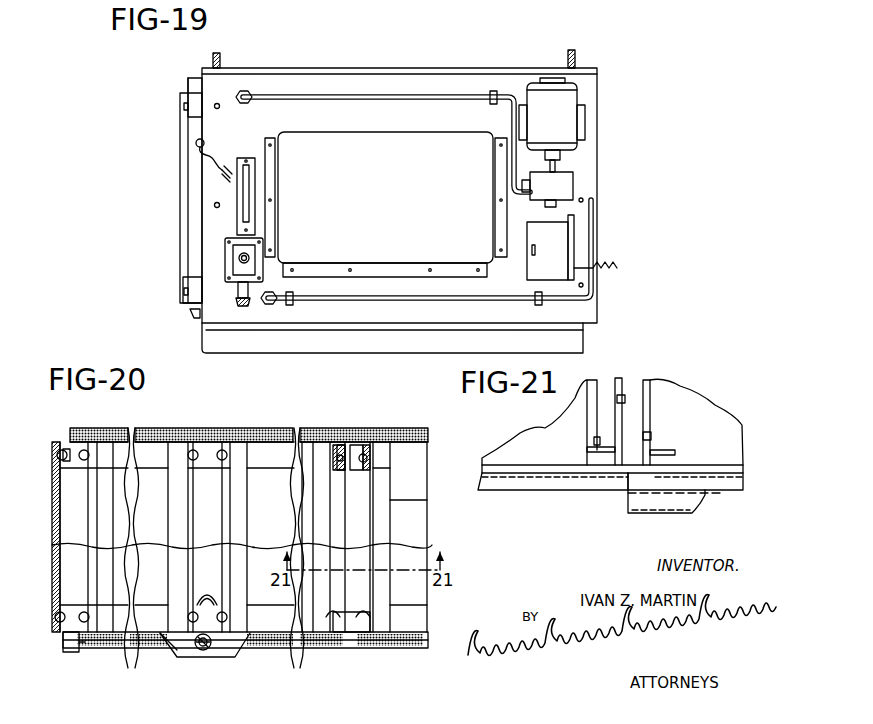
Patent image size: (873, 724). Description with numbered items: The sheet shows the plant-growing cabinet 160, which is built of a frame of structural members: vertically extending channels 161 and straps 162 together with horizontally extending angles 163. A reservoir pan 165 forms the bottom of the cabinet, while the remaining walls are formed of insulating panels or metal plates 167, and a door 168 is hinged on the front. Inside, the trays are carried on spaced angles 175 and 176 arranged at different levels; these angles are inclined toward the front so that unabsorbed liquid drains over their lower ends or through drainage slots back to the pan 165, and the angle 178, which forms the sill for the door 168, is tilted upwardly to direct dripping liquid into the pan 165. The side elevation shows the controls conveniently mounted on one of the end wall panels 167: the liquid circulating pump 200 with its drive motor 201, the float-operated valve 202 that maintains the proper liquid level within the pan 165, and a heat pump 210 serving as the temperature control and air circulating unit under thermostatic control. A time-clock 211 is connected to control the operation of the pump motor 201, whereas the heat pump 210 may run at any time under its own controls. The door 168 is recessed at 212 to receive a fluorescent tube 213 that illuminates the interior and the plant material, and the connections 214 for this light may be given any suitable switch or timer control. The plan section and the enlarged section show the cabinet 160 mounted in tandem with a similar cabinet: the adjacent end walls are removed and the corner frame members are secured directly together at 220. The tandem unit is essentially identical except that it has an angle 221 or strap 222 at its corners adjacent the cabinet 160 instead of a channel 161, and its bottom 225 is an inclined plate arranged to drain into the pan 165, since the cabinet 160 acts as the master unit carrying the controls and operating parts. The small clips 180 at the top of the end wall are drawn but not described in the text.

In FIG. 19, the cabinet 160 is at (291, 62).
In FIG. 20, the cabinet 160 is at (152, 425).
In FIG. 21, the cabinet 160 is at (702, 381).
In FIG. 20, the vertically extending channels 161 is at (65, 437).
In FIG. 21, the vertically extending channels 161 is at (642, 385).
In FIG. 20, the straps 162 is at (207, 604).
In FIG. 20, the horizontally extending angles 163 is at (420, 460).
In FIG. 21, the horizontally extending angles 163 is at (505, 485).
In FIG. 19, the reservoir pan 165 is at (231, 345).
In FIG. 21, the reservoir pan 165 is at (645, 513).
In FIG. 19, the metal plates 167 is at (387, 70).
In FIG. 20, the metal plates 167 is at (50, 545).
In FIG. 19, the door 168 is at (190, 178).
In FIG. 20, the door 168 is at (130, 648).
In FIG. 20, the angles 175 is at (400, 505).
In FIG. 21, the angles 175 is at (595, 448).
In FIG. 20, the angles 176 is at (240, 524).
In FIG. 19, the angle 178 is at (196, 318).
In FIG. 19, the clip 180 is at (213, 58).
In FIG. 19, the liquid circulating pump 200 is at (560, 178).
In FIG. 19, the drive motor 201 is at (570, 93).
In FIG. 19, the valve 202 is at (237, 262).
In FIG. 19, the heat pump 210 is at (401, 213).
In FIG. 19, the time-clock 211 is at (565, 240).
In FIG. 19, the recess 212 is at (181, 128).
In FIG. 20, the recess 212 is at (248, 650).
In FIG. 20, the fluorescent tube 213 is at (205, 655).
In FIG. 19, the connections 214 is at (203, 158).
In FIG. 20, the secured corner frame members 220 is at (337, 424).
In FIG. 21, the secured corner frame members 220 is at (619, 377).
In FIG. 20, the angle 221 is at (325, 430).
In FIG. 21, the angle 221 is at (600, 374).
In FIG. 20, the strap 222 is at (335, 648).
In FIG. 20, the bottom 225 is at (265, 475).
In FIG. 21, the bottom 225 is at (557, 478).